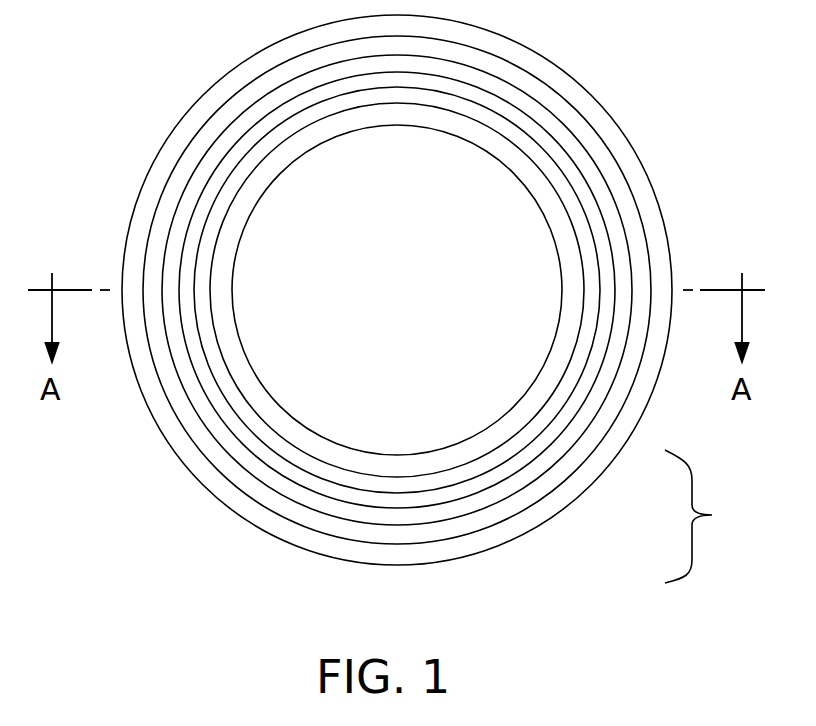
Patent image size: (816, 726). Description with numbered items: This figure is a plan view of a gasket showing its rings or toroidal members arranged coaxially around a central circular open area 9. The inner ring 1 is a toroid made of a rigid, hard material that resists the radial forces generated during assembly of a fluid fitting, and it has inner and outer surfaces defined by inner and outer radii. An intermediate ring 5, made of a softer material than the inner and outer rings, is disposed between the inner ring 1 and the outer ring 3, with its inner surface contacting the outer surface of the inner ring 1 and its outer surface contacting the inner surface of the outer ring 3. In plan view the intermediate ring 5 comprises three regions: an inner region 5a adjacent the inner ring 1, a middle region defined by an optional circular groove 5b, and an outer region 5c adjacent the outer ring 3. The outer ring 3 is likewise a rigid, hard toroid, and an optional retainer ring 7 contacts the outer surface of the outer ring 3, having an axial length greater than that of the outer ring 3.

The inner ring 1 is at (537, 182).
The outer ring 3 is at (613, 175).
The intermediate ring 5 is at (697, 516).
The inner region 5a is at (547, 415).
The circular groove 5b is at (540, 442).
The outer region 5c is at (533, 468).
The retainer ring 7 is at (657, 230).
The central circular open area 9 is at (400, 302).